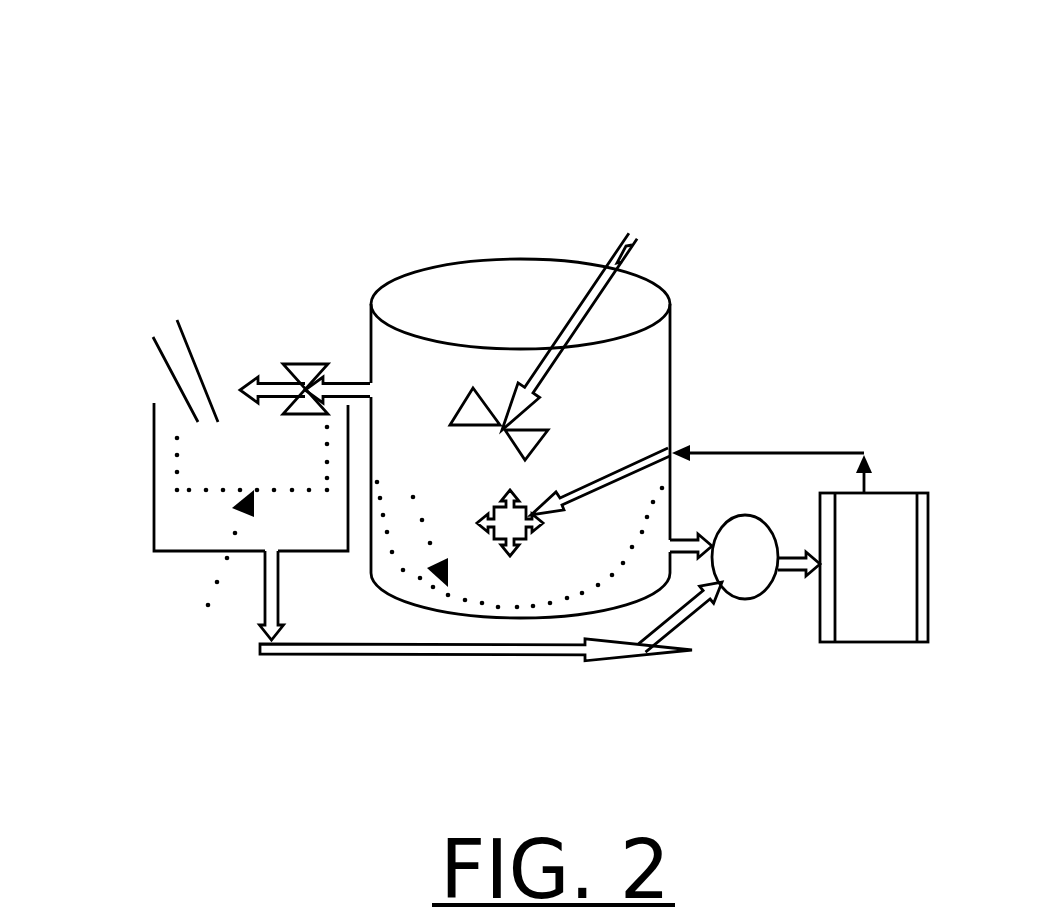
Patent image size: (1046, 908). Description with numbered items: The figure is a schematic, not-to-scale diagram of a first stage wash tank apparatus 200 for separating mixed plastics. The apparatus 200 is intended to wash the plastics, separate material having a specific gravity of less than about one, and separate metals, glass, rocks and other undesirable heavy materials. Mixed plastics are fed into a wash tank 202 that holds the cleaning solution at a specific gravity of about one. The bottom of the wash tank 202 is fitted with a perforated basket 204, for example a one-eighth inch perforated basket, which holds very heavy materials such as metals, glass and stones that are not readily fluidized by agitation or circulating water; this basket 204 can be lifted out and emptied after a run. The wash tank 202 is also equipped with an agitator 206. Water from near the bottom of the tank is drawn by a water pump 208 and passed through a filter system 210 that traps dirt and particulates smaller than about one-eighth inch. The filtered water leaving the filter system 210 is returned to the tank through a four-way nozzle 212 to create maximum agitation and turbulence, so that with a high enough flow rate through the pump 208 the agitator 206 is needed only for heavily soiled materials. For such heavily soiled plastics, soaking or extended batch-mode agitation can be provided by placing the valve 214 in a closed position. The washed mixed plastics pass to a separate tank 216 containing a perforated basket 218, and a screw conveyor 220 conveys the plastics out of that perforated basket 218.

The wash tank apparatus 200 is at (558, 60).
The wash tank 202 is at (478, 290).
The perforated basket 204 is at (520, 531).
The agitator 206 is at (543, 355).
The water pump 208 is at (745, 557).
The filter system 210 is at (800, 543).
The four-way nozzle 212 is at (573, 515).
The valve 214 is at (305, 368).
The separate tank 216 is at (167, 561).
The perforated basket 218 is at (200, 588).
The screw conveyor 220 is at (176, 356).